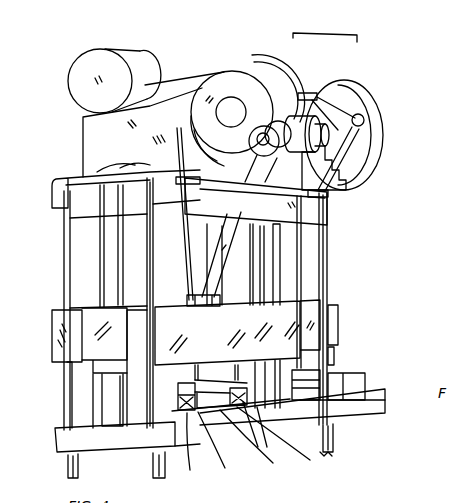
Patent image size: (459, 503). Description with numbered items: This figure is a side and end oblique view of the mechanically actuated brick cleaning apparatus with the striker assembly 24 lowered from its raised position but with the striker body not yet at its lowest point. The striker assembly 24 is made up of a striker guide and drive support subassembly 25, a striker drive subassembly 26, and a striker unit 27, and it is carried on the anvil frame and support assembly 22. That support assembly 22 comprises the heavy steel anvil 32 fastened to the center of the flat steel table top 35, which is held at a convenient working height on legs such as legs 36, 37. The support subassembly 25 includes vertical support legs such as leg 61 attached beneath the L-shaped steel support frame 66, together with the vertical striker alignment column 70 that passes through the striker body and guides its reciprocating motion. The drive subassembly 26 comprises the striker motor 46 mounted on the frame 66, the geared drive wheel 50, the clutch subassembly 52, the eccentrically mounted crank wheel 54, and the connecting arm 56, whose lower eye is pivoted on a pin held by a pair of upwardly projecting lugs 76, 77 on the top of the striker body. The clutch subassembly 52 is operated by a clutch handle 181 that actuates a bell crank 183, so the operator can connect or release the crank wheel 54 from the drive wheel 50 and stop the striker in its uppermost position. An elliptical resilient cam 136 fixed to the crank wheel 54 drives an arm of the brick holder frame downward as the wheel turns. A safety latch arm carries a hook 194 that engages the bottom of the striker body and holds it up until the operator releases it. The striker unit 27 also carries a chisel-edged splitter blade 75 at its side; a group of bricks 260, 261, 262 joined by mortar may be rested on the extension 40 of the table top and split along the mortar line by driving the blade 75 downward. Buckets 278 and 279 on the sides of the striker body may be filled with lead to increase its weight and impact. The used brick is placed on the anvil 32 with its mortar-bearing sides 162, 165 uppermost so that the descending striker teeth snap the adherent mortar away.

The striker motor 46 is at (70, 80).
The eccentrically mounted crank wheel 54 is at (222, 80).
The elliptical resilient cam 136 is at (260, 62).
The clutch subassembly 52 is at (325, 59).
The bell crank 183 is at (297, 93).
The clutch handle 181 is at (322, 67).
The geared drive wheel 50 is at (364, 130).
The striker drive subassembly support frame 66 is at (58, 188).
The vertical support leg 61 is at (64, 246).
The striker alignment column 70 is at (103, 248).
The anvil frame and support assembly 22 is at (54, 282).
The hook 194 is at (188, 240).
The striker drive subassembly 26 is at (342, 203).
The connecting arm 56 is at (240, 240).
The striker guide and drive support subassembly 25 is at (305, 285).
The striker unit 27 is at (324, 309).
The striker assembly 24 is at (360, 232).
The bucket 279 is at (333, 326).
The splitter blade 75 is at (330, 362).
The brick 260 is at (330, 368).
The brick 261 is at (355, 383).
The brick 262 is at (372, 406).
The extension of the table top 40 is at (343, 427).
The leg 36 is at (67, 472).
The leg 37 is at (157, 473).
The bucket 278 is at (52, 333).
The lug 76 is at (237, 332).
The lug 77 is at (216, 302).
The brick side 162 is at (211, 439).
The brick side 165 is at (262, 431).
The anvil 32 is at (243, 431).
The table top 35 is at (458, 322).